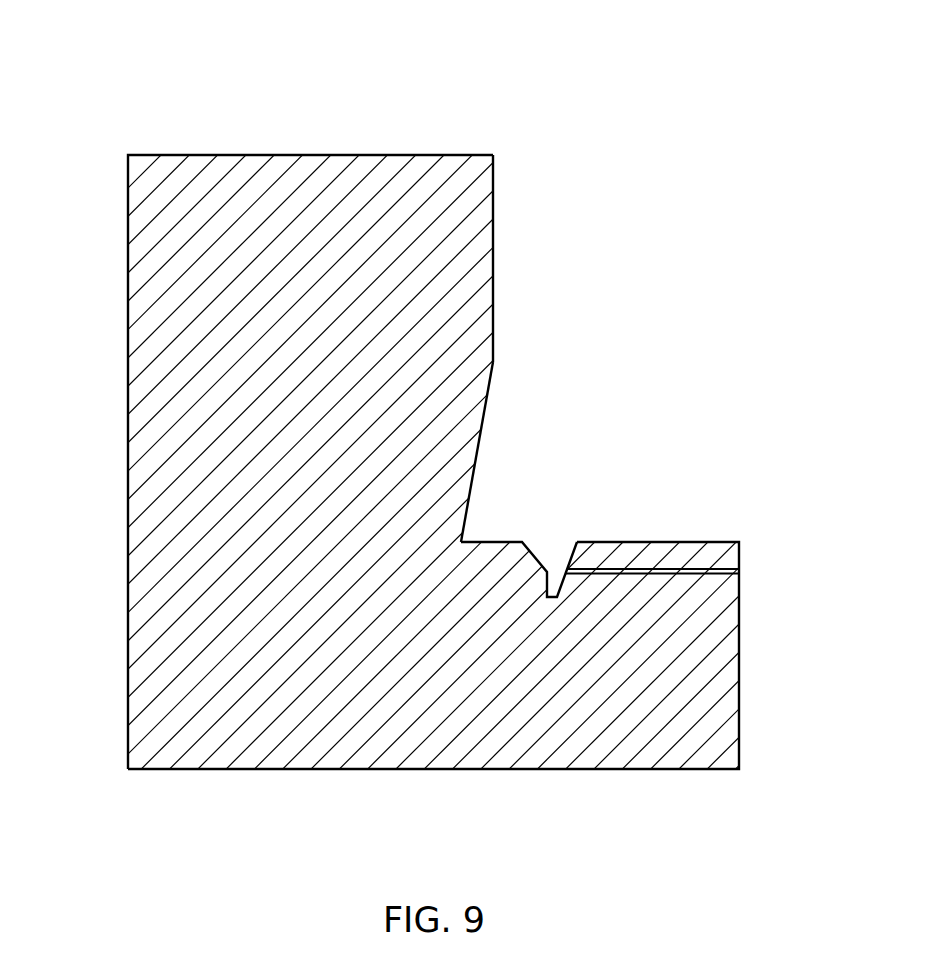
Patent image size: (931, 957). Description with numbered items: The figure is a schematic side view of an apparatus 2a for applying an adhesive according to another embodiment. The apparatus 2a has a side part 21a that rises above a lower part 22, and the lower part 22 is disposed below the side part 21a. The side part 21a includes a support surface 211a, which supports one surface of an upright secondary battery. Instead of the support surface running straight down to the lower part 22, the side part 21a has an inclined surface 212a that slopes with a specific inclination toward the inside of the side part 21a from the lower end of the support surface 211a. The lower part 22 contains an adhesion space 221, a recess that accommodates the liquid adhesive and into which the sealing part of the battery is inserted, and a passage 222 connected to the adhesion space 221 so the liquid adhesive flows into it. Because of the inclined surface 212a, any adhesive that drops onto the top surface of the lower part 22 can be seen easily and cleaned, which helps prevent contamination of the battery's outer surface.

The apparatus for applying an adhesive 2a is at (598, 90).
The side part 21a is at (146, 420).
The support surface 211a is at (494, 258).
The inclined surface 212a is at (477, 450).
The adhesion space 221 is at (556, 549).
The lower part 22 is at (551, 741).
The passage 222 is at (740, 570).